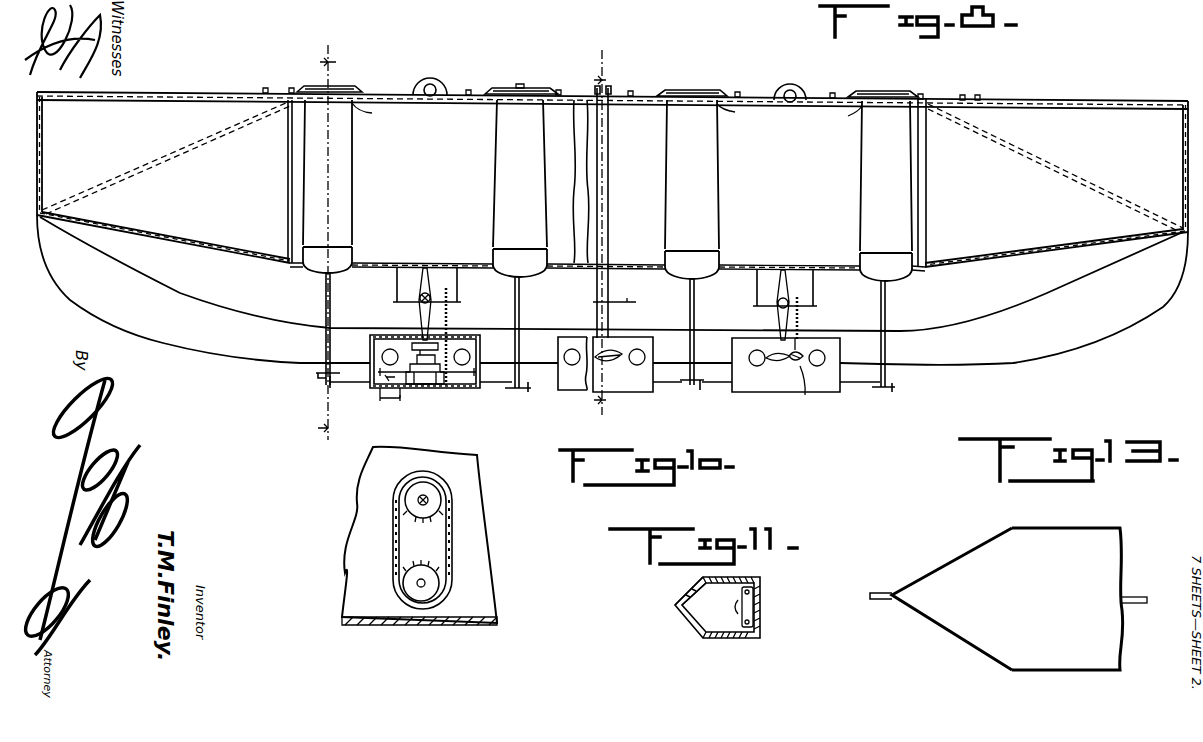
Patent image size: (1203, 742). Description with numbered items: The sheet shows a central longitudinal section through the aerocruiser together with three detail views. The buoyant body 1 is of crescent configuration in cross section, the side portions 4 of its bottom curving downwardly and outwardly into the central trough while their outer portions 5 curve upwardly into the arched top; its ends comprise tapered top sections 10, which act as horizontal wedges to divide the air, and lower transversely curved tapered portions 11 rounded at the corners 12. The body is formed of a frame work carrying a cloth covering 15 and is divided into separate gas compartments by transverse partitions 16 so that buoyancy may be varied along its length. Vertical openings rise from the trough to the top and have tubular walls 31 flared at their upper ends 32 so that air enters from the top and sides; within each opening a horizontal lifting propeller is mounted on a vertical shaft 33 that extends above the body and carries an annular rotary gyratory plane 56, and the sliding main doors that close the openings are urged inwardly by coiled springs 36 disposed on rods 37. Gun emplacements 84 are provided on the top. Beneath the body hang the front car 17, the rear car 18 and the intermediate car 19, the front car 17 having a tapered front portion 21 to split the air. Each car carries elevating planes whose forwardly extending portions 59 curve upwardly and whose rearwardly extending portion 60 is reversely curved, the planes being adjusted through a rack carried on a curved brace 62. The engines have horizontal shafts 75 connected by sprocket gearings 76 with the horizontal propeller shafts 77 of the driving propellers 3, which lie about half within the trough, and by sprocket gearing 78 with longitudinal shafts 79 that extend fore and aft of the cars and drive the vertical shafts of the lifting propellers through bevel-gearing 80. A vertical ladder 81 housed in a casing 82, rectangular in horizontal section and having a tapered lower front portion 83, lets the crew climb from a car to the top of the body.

In FIG. 3, the buoyant body 1 is at (944, 263).
In FIG. 3, the driving propellers 3 is at (432, 288).
In FIG. 3, the side portions of the bottom 4 is at (604, 239).
In FIG. 3, the outer portions 5 is at (325, 240).
In FIG. 3, the tapered top sections 10 is at (1162, 97).
In FIG. 3, the lower transversely curved tapered portions 11 is at (67, 268).
In FIG. 3, the rounded corners 12 is at (81, 305).
In FIG. 3, the covering 15 is at (229, 82).
In FIG. 3, the transverse partitions 16 is at (288, 164).
In FIG. 3, the front car 17 is at (432, 390).
In FIG. 12, the front car 17 is at (1092, 538).
In FIG. 3, the rear car 18 is at (808, 400).
In FIG. 3, the intermediate car 19 is at (576, 390).
In FIG. 12, the tapered front portion 21 is at (928, 574).
In FIG. 3, the tubular walls 31 is at (356, 186).
In FIG. 3, the flared upper ends 32 is at (372, 113).
In FIG. 3, the vertical shaft 33 is at (325, 301).
In FIG. 3, the coiled springs 36 is at (291, 88).
In FIG. 3, the rods 37 is at (266, 92).
In FIG. 3, the rotary gyratory member or plane 56 is at (352, 86).
In FIG. 3, the forwardly extending portions 59 is at (836, 412).
In FIG. 3, the rearwardly extending portion 60 is at (772, 362).
In FIG. 3, the curved brace 62 is at (796, 366).
In FIG. 3, the horizontal shafts 75 is at (420, 390).
In FIG. 10, the horizontal shafts 75 is at (429, 500).
In FIG. 3, the sprocket gearings 76 is at (450, 320).
In FIG. 3, the horizontal propeller shafts 77 is at (397, 302).
In FIG. 3, the sprocket gearing 78 is at (372, 390).
In FIG. 10, the sprocket gearing 78 is at (452, 555).
In FIG. 3, the longitudinal shafts 79 is at (506, 390).
In FIG. 10, the longitudinal shafts 79 is at (425, 583).
In FIG. 12, the longitudinal shafts 79 is at (1138, 606).
In FIG. 3, the bevel-gearing 80 is at (318, 378).
In FIG. 11, the vertical ladder 81 is at (755, 608).
In FIG. 11, the casing 82 is at (720, 640).
In FIG. 3, the tapered lower front portion 83 is at (592, 277).
In FIG. 11, the tapered lower front portion 83 is at (690, 622).
In FIG. 3, the gun emplacements 84 is at (518, 88).